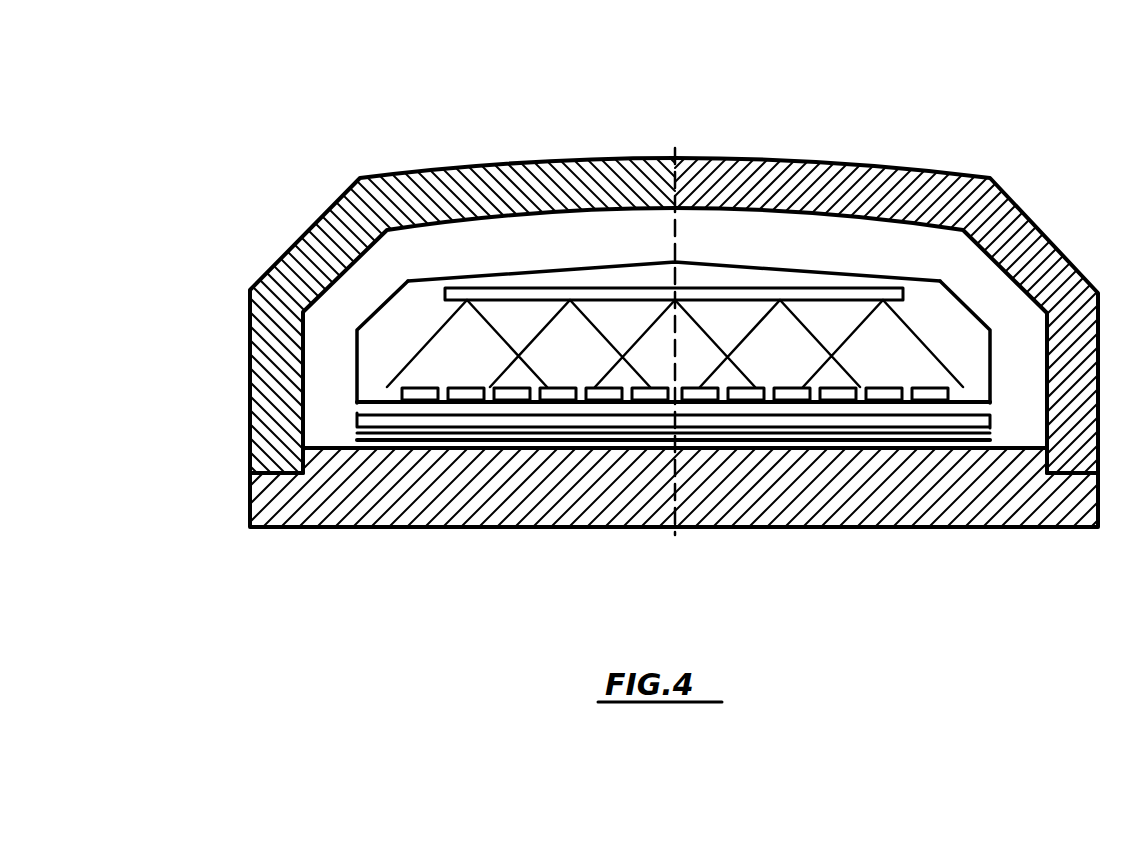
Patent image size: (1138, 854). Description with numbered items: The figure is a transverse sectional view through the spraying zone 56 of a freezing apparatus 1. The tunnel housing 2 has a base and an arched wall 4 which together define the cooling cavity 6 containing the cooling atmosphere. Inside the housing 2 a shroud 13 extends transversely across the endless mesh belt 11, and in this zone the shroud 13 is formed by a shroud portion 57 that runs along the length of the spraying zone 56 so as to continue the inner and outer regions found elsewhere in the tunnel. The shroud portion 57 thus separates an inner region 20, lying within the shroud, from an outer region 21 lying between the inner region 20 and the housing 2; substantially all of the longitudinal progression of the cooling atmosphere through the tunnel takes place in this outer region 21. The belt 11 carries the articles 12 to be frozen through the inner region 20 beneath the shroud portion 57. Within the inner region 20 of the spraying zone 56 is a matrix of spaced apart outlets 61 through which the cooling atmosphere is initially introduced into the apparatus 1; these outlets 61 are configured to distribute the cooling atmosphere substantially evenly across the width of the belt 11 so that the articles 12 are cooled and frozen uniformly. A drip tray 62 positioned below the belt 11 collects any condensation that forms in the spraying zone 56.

The freezing apparatus 1 is at (892, 105).
The tunnel housing 2 is at (684, 286).
The arched wall 4 is at (313, 263).
The cooling cavity 6 is at (325, 360).
The endless mesh belt 11 is at (365, 441).
The articles 12 is at (427, 395).
The shroud 13 is at (838, 271).
The inner region 20 is at (796, 367).
The outer region 21 is at (740, 237).
The spraying zone 56 is at (546, 145).
The shroud portion 57 is at (580, 262).
The outlets 61 is at (465, 298).
The drip tray 62 is at (353, 418).